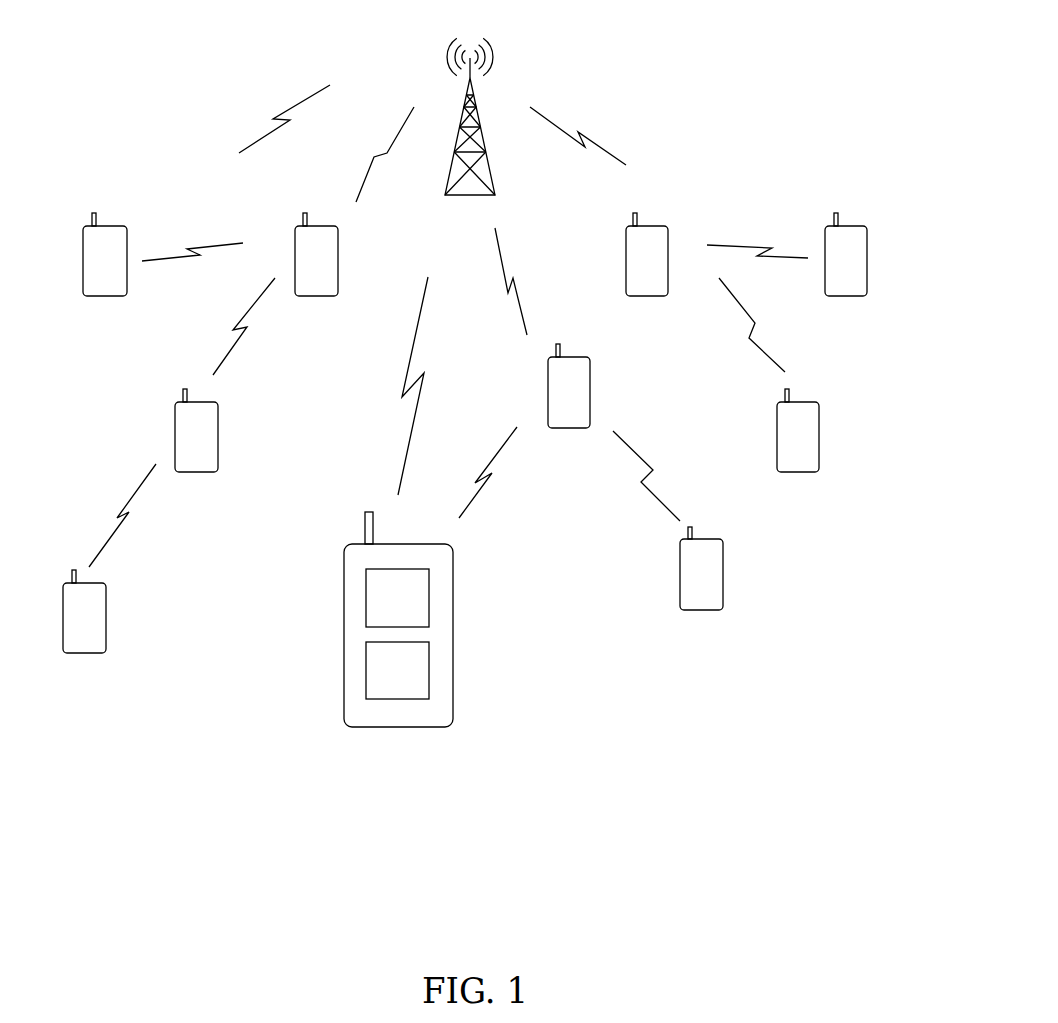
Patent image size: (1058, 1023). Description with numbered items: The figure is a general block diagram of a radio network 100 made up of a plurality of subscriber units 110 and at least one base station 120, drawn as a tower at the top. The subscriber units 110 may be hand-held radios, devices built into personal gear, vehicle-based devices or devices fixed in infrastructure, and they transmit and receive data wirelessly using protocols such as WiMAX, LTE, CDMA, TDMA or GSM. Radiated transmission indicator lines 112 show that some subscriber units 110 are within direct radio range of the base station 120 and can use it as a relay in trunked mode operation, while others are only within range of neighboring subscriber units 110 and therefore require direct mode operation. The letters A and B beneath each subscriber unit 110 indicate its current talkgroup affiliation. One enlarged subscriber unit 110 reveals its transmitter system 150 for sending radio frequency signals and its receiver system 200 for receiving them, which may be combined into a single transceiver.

The radio network 100 is at (750, 68).
The subscriber unit 110 is at (97, 262).
The radiated transmission indicator line 112 is at (302, 102).
The base station 120 is at (485, 152).
The transmitter system 150 is at (366, 597).
The receiver system 200 is at (366, 669).